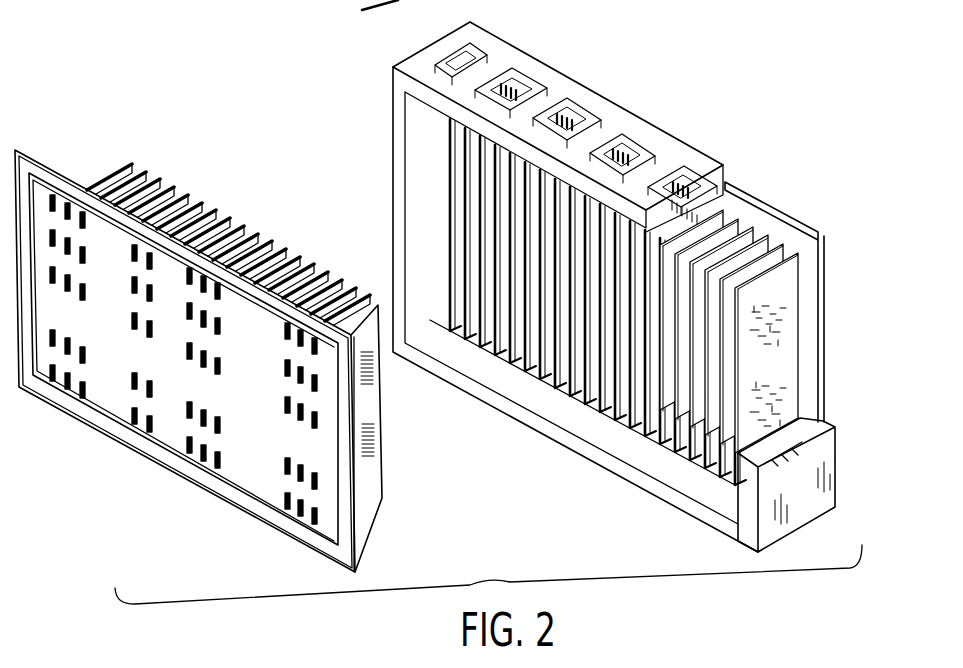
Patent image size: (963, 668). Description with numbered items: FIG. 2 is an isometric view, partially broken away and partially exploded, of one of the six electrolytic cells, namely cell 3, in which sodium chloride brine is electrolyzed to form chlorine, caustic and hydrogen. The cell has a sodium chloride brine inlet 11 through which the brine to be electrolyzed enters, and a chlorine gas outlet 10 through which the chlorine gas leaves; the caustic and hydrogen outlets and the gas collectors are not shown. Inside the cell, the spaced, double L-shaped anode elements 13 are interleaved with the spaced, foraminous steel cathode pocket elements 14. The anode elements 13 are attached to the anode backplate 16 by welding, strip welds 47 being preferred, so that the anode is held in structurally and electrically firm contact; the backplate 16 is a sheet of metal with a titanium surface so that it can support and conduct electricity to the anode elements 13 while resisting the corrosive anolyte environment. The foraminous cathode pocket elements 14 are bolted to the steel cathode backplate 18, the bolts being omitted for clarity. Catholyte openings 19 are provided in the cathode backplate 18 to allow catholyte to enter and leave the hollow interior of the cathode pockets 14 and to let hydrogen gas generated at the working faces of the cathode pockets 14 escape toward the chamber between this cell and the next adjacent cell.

The electrolytic cell 3 is at (837, 483).
The chlorine gas outlet 10 is at (628, 140).
The sodium chloride brine inlet 11 is at (462, 62).
The double L-shaped anode element 13 is at (747, 232).
The foraminous steel cathode pocket element 14 is at (233, 222).
The anode backplate 16 is at (733, 218).
The cathode backplate 18 is at (247, 443).
The catholyte opening 19 is at (86, 350).
The strip weld 47 is at (815, 305).